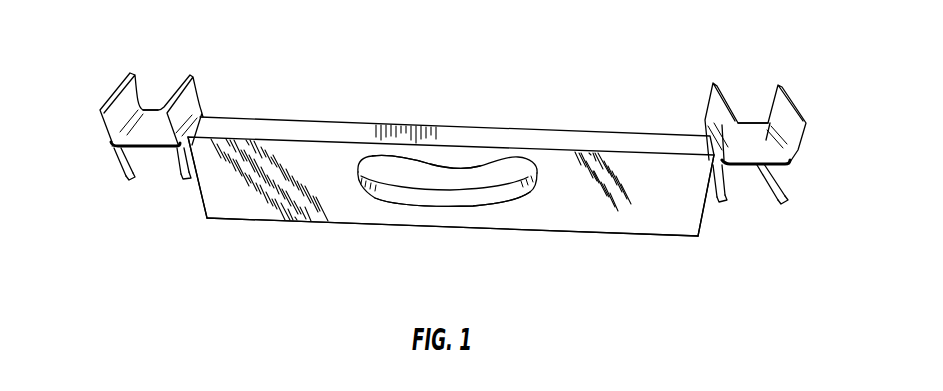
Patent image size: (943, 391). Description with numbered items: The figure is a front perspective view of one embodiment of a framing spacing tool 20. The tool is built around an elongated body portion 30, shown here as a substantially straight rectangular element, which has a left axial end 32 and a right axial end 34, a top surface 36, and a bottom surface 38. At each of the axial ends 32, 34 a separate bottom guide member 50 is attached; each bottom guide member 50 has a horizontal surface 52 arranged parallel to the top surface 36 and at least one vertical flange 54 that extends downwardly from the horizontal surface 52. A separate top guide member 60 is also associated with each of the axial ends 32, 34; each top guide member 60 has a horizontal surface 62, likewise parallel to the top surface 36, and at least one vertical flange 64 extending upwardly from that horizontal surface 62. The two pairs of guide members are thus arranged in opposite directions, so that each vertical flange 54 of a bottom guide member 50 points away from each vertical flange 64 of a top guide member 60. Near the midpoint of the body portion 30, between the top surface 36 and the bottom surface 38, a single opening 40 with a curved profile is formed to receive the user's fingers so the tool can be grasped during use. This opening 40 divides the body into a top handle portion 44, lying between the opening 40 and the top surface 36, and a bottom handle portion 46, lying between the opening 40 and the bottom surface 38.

The framing spacing tool 20 is at (376, 84).
The elongated body portion 30 is at (567, 198).
The left axial end 32 is at (202, 193).
The right axial end 34 is at (702, 210).
The top surface 36 is at (553, 135).
The bottom surface 38 is at (349, 226).
The opening 40 is at (488, 183).
The top handle portion 44 is at (447, 153).
The bottom handle portion 46 is at (440, 219).
The bottom guide member 50 is at (429, 219).
The horizontal surface 52 is at (152, 150).
The vertical flange 54 is at (126, 178).
The top guide member 60 is at (438, 156).
The horizontal surface 62 is at (148, 120).
The vertical flange 64 is at (125, 105).